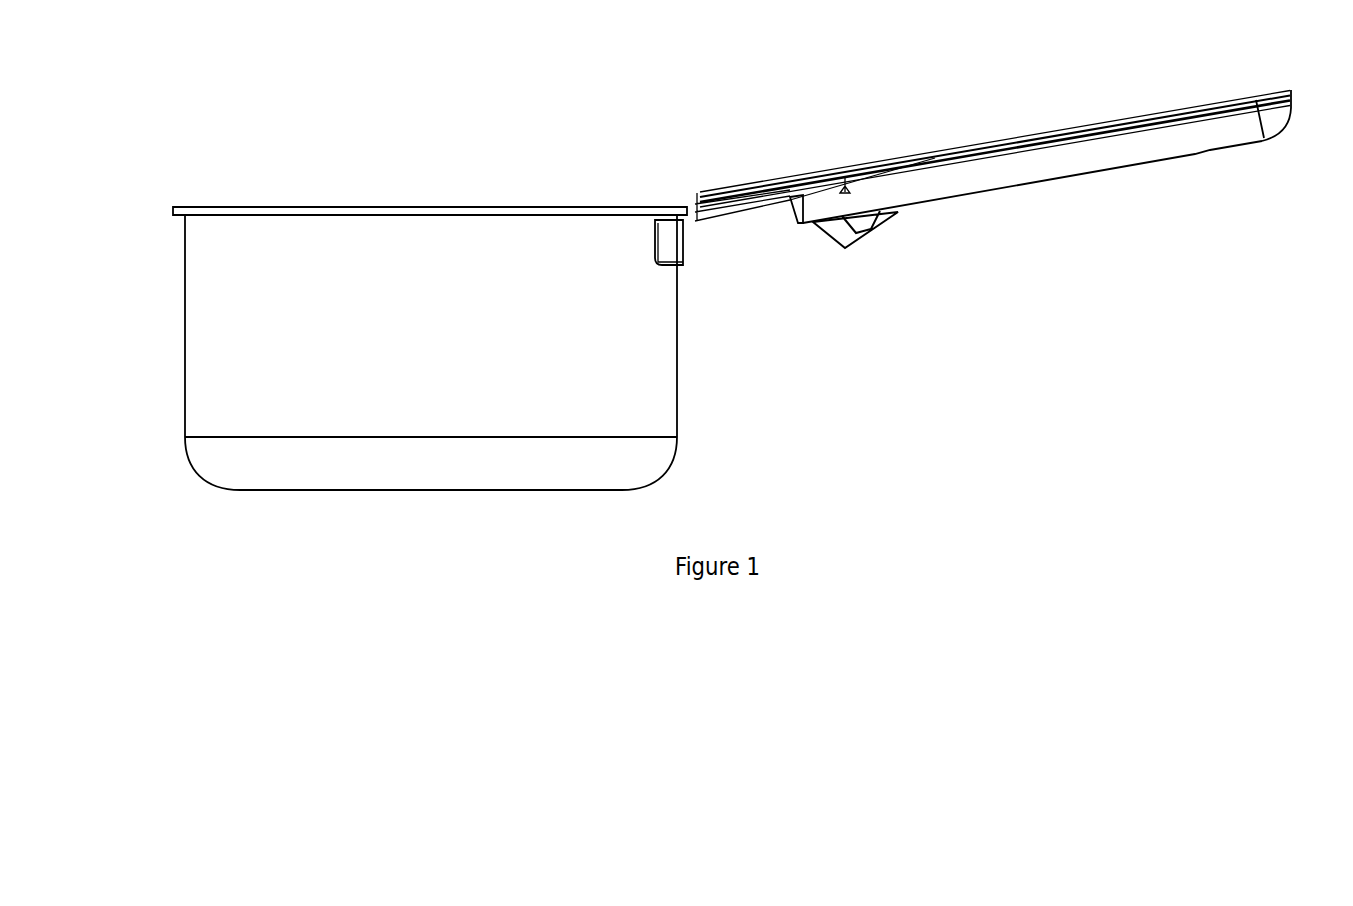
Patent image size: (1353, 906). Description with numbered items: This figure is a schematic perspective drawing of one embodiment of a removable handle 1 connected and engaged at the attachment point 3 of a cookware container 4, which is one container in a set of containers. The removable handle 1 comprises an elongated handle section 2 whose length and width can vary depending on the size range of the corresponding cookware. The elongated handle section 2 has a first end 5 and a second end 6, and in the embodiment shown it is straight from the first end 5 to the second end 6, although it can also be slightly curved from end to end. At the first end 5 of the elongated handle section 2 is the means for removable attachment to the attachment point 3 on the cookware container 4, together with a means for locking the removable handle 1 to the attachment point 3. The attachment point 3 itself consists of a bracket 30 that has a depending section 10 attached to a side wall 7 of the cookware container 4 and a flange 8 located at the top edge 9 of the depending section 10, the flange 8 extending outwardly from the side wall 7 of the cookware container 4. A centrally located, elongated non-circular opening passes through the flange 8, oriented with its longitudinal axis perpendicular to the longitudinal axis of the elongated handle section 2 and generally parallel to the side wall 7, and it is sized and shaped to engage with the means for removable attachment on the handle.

The removable handle 1 is at (708, 184).
The elongated handle section 2 is at (1045, 160).
The attachment point 3 is at (718, 233).
The cookware container 4 is at (422, 192).
The first end 5 is at (812, 205).
The second end 6 is at (1278, 122).
The side wall 7 is at (645, 365).
The flange 8 is at (692, 212).
The top edge 9 is at (665, 213).
The depending section 10 is at (672, 252).
The bracket 30 is at (693, 250).